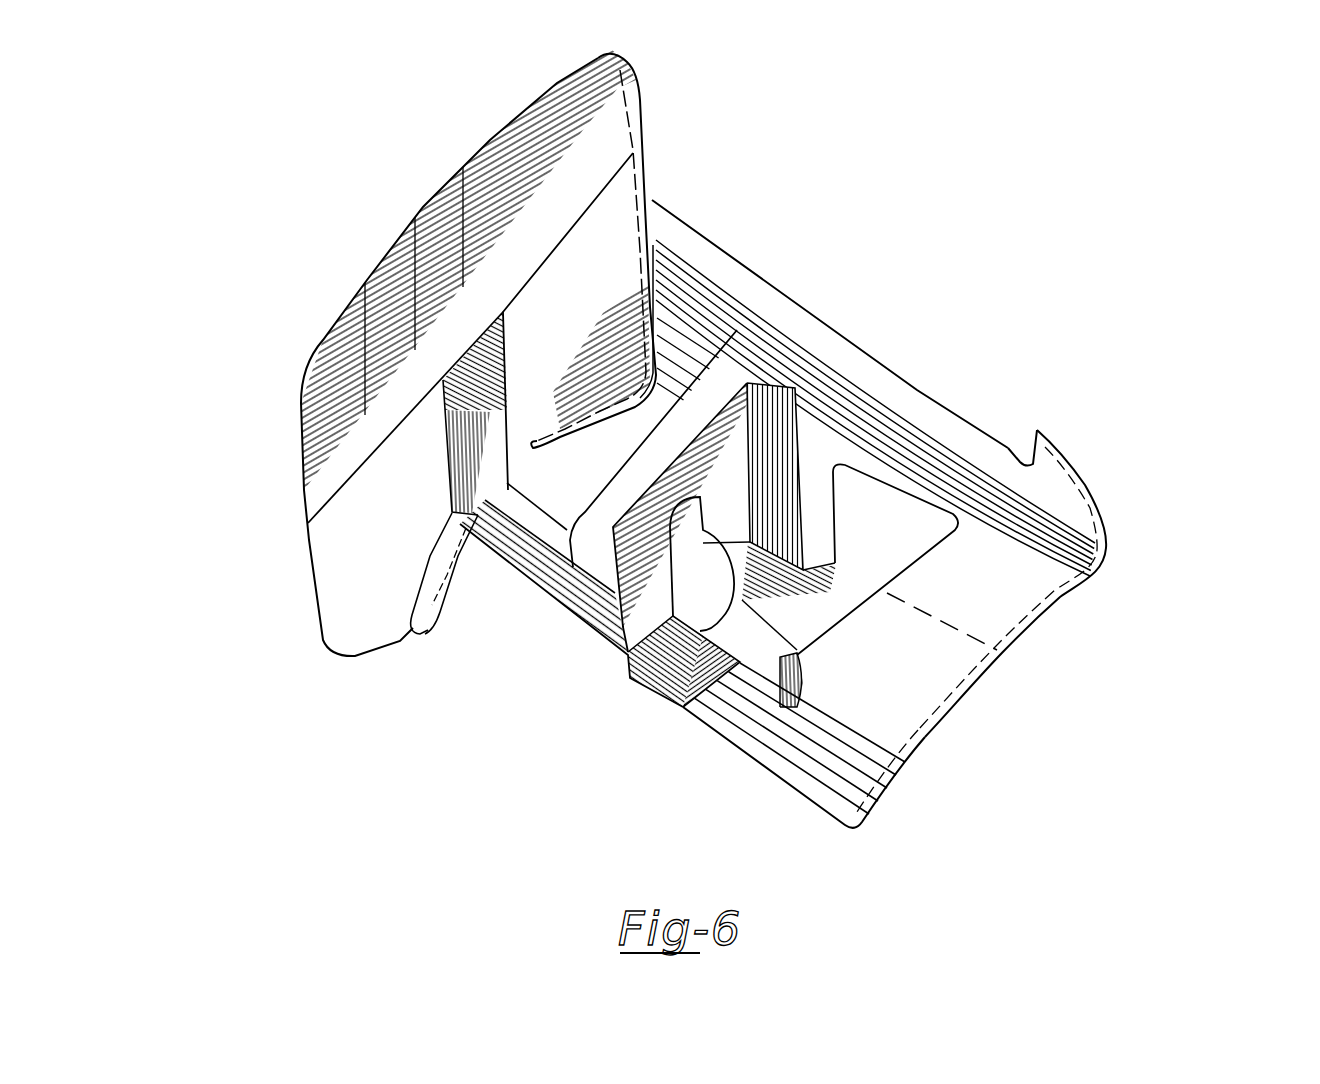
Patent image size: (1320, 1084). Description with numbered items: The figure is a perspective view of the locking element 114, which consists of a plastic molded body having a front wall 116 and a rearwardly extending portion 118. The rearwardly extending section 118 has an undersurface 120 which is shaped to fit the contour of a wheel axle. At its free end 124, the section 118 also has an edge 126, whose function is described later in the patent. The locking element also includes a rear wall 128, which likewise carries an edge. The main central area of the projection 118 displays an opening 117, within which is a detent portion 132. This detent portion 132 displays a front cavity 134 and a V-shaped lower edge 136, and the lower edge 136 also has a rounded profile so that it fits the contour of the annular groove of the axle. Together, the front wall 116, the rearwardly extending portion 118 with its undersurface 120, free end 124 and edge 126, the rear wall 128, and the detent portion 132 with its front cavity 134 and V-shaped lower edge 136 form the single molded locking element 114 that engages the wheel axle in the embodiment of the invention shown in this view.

The locking element 114 is at (862, 478).
The front wall 116 is at (475, 382).
The opening 117 is at (697, 403).
The rearwardly extending portion 118 is at (905, 370).
The undersurface 120 is at (907, 765).
The free end 124 is at (1073, 500).
The edge 126 is at (1023, 445).
The rear wall 128 is at (647, 142).
The detent portion 132 is at (565, 600).
The front cavity 134 is at (612, 652).
The V-shaped lower edge 136 is at (673, 707).